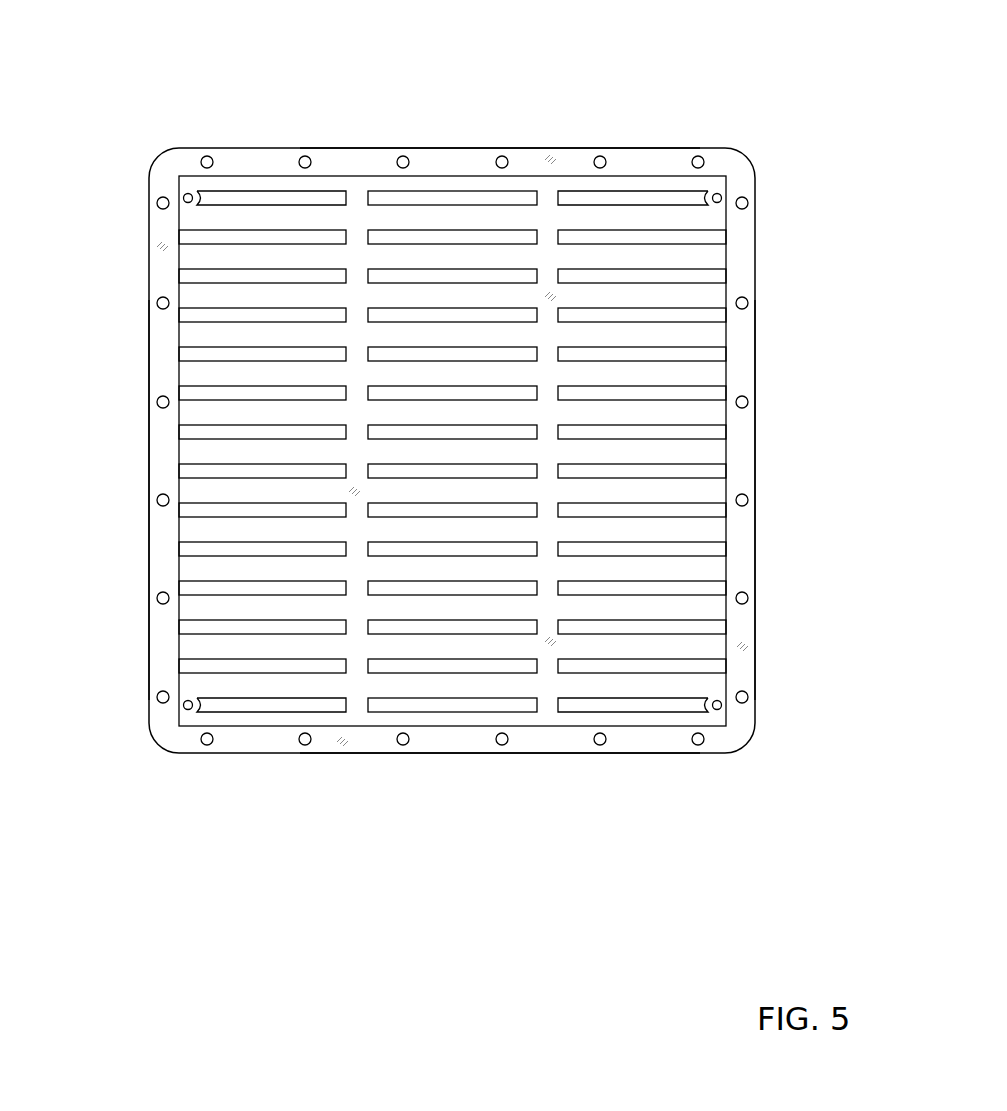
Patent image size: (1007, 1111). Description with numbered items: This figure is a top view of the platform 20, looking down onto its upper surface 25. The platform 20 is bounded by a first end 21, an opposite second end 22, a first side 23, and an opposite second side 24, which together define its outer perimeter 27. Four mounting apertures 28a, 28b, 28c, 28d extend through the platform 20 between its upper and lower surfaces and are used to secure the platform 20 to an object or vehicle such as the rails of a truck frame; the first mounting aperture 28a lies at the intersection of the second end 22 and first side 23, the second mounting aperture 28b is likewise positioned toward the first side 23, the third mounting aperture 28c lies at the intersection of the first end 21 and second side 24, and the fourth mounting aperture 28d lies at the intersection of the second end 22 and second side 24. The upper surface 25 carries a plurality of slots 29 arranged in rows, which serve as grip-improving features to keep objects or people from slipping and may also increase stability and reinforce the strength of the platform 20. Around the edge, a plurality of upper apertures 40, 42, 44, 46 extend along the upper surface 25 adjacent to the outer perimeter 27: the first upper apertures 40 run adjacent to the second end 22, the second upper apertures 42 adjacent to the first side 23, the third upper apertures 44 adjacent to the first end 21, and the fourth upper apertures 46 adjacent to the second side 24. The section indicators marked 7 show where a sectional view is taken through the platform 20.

The platform 20 is at (574, 140).
The first end 21 is at (673, 148).
The second end 22 is at (587, 753).
The first side 23 is at (149, 633).
The second side 24 is at (755, 621).
The upper surface 25 is at (228, 570).
The outer perimeter 27 is at (149, 265).
The first mounting aperture 28a is at (188, 709).
The second mounting aperture 28b is at (188, 193).
The third mounting aperture 28c is at (717, 193).
The fourth mounting aperture 28d is at (721, 707).
The slots 29 is at (687, 348).
The first upper apertures 40 is at (403, 745).
The second upper apertures 42 is at (157, 494).
The third upper apertures 44 is at (748, 500).
The fourth upper apertures 46 is at (403, 156).
The section line 7- 7 is at (452, 55).